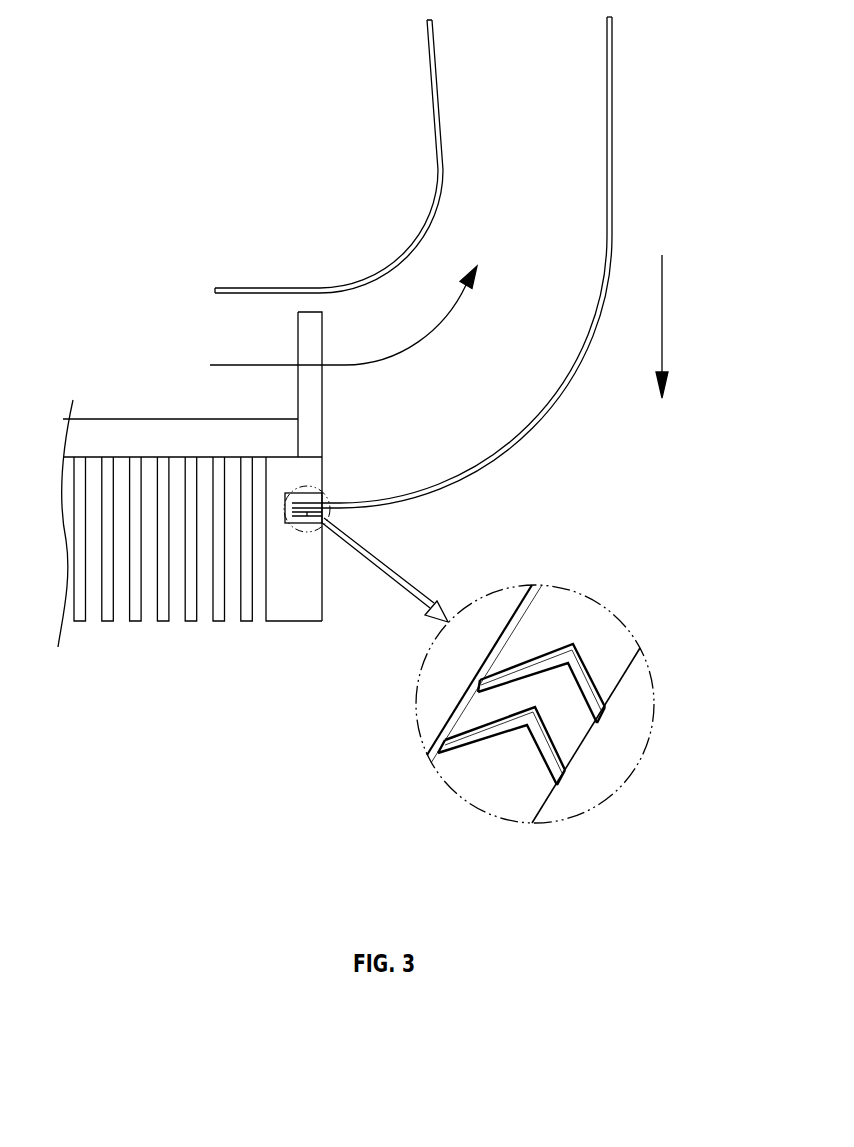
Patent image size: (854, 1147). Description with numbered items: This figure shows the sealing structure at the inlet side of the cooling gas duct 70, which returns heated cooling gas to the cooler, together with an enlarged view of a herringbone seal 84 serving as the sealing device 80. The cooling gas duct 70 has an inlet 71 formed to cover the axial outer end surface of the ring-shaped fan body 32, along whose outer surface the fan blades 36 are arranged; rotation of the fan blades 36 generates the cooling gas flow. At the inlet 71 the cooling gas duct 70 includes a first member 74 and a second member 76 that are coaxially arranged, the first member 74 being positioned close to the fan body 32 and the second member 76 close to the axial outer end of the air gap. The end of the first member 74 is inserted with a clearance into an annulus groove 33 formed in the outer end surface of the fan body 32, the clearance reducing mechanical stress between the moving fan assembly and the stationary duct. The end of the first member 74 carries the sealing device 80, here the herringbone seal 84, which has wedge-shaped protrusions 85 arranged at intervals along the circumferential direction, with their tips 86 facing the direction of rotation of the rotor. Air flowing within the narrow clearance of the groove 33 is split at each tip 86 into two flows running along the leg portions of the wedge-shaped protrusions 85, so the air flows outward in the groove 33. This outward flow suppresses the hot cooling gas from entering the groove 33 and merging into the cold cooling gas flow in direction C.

The cooling gas duct 70 is at (476, 262).
The first member 74 is at (693, 50).
The second member 76 is at (438, 77).
The inlet 71 is at (430, 389).
The fan blades 36 is at (310, 338).
The annulus groove 33 is at (278, 453).
The fan body 32 is at (300, 607).
The sealing device 80 is at (305, 490).
The herringbone seal 84 is at (515, 672).
The wedge-shaped protrusions 85 is at (600, 717).
The tips 86 is at (573, 645).
The C-direction flow C is at (662, 310).